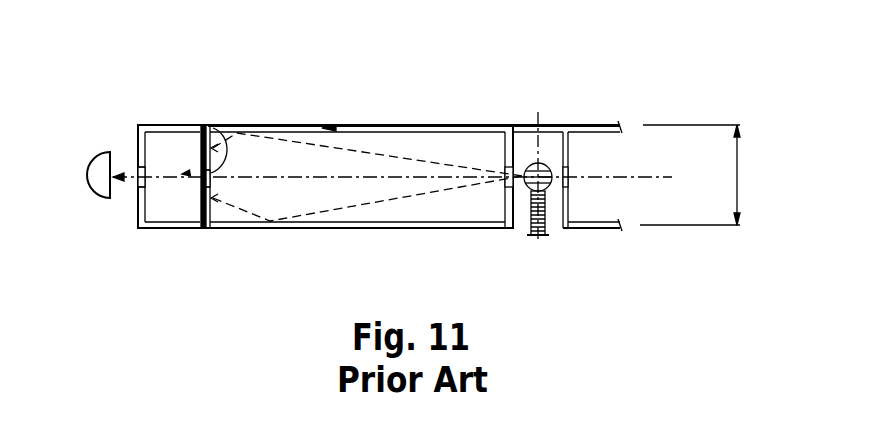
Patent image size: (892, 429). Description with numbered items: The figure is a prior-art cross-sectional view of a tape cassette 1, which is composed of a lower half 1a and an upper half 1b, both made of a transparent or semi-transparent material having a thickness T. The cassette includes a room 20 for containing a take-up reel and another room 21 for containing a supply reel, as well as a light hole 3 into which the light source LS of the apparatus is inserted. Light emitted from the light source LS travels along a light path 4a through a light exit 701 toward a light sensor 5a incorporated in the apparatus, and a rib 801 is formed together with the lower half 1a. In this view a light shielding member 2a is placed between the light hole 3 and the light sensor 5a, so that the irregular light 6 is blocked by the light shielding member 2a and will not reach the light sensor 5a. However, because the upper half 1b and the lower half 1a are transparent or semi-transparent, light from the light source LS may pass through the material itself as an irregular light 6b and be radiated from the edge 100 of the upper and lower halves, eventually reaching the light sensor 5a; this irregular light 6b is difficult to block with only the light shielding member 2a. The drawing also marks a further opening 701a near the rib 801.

The tape cassette 1 is at (325, 205).
The lower half 1a is at (330, 223).
The upper half 1b is at (378, 124).
The light shielding member 2a is at (116, 205).
The light hole 3 is at (567, 180).
The light path 4a is at (370, 178).
The light sensor 5a is at (90, 160).
The irregular light 6 is at (350, 145).
The irregular light 6b is at (200, 171).
The room 20 is at (415, 115).
The room 21 is at (654, 156).
The edge 100 is at (222, 127).
The light exit 701 is at (137, 183).
The aperture 701a is at (215, 197).
The rib 801 is at (210, 183).
The light source LS is at (550, 232).
The thickness T is at (738, 185).